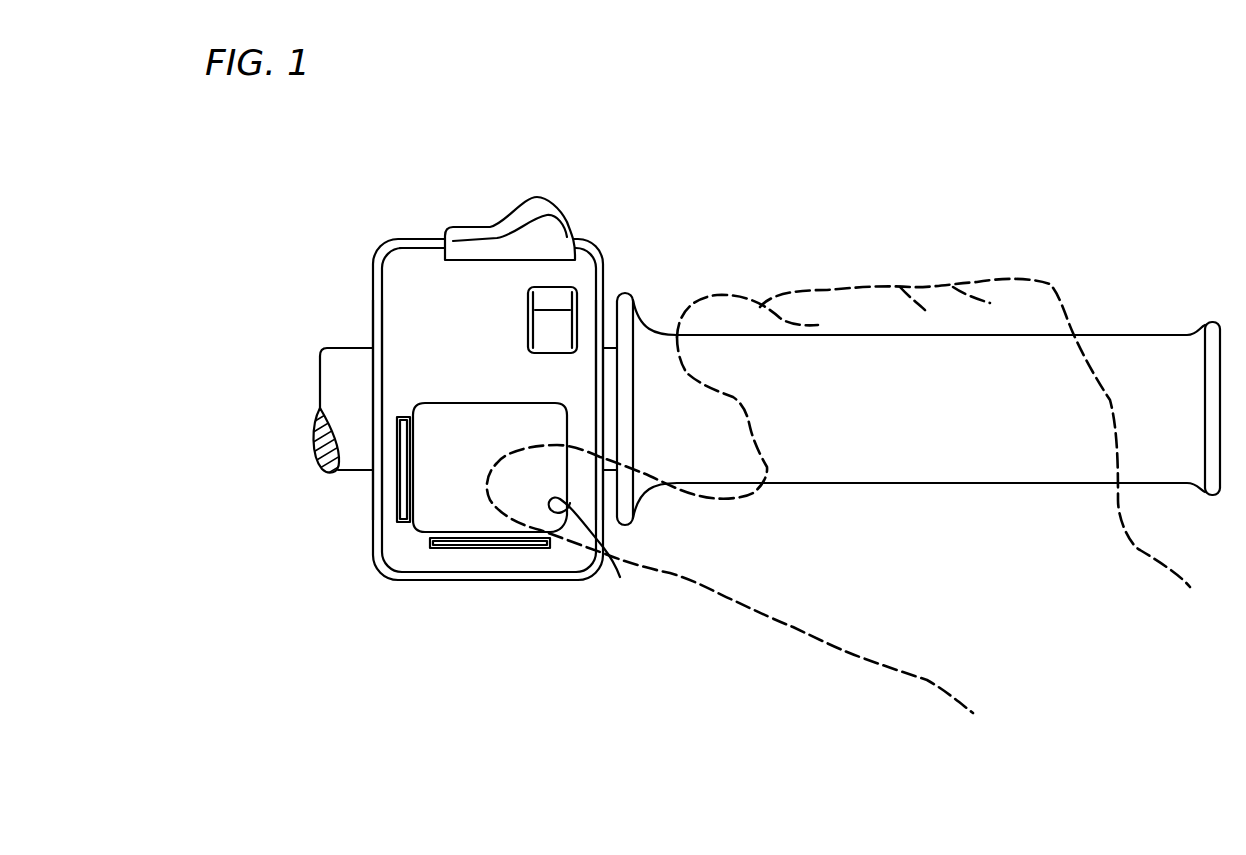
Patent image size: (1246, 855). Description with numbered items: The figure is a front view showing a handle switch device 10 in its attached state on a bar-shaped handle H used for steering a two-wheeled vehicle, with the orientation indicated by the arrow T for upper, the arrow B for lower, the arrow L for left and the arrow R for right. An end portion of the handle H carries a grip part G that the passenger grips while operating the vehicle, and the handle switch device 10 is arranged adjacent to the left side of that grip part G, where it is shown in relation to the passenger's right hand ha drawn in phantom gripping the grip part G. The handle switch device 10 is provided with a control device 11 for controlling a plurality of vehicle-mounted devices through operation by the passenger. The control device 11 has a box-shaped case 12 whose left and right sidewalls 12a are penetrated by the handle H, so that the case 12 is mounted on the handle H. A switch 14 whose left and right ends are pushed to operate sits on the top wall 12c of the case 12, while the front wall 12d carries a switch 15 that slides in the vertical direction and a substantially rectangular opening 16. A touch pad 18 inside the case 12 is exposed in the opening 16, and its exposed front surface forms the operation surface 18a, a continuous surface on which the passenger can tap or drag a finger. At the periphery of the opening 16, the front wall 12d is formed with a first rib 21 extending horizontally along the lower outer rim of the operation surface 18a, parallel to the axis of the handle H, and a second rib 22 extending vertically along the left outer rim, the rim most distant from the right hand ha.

The handle switch device 10 is at (713, 173).
The control device 11 is at (371, 232).
The case 12 is at (401, 231).
The sidewall 12a is at (372, 325).
The top wall 12c is at (423, 238).
The front wall 12d is at (563, 557).
The switch 14 is at (543, 204).
The switch 15 is at (555, 302).
The opening 16 is at (594, 555).
The touch pad 18 is at (432, 522).
The operation surface 18a is at (467, 416).
The first rib 21 is at (487, 550).
The second rib 22 is at (398, 502).
The handle H is at (340, 347).
The grip part G is at (1127, 350).
The right hand ha is at (777, 623).
The arrow T is at (1170, 150).
The arrow B is at (1170, 610).
The arrow L is at (417, 721).
The arrow R is at (1122, 719).